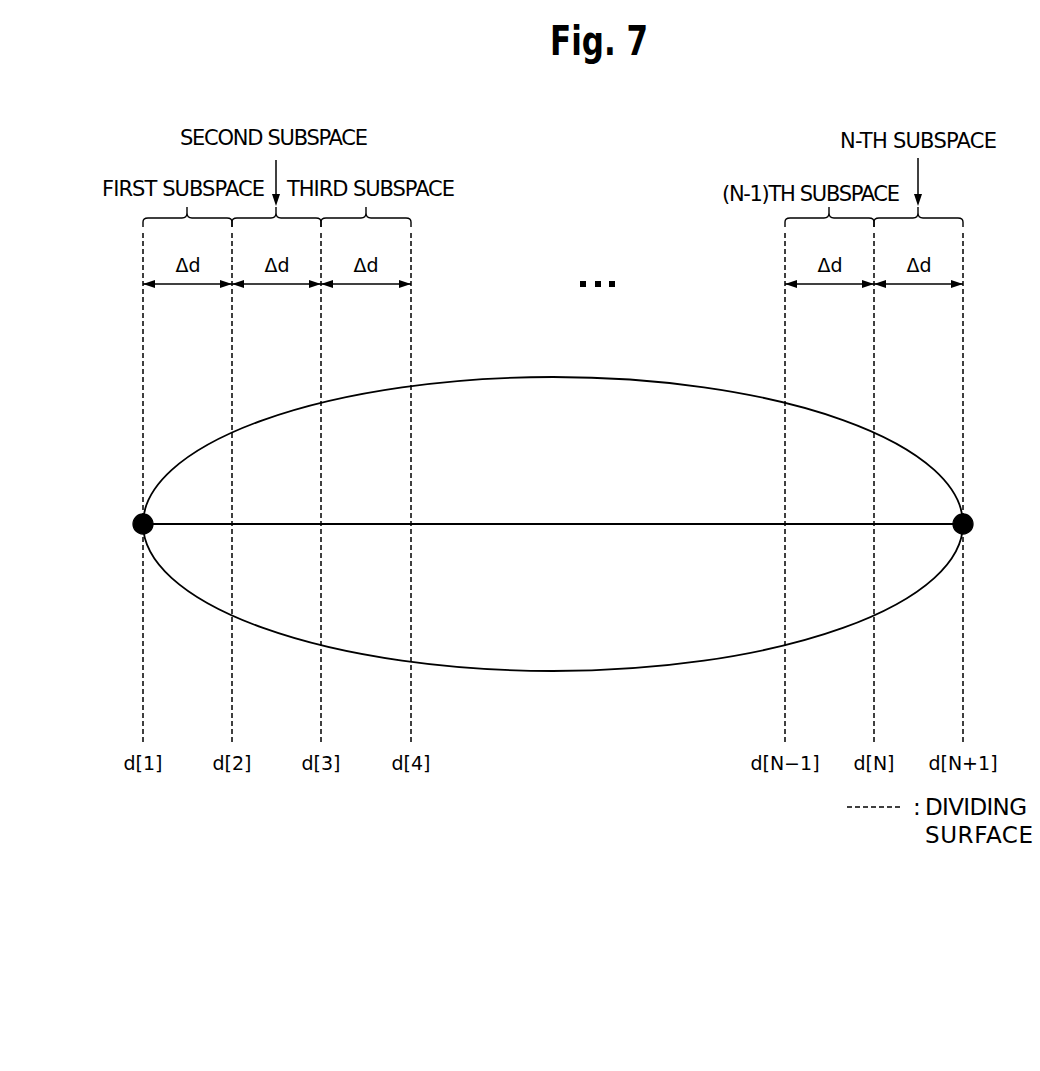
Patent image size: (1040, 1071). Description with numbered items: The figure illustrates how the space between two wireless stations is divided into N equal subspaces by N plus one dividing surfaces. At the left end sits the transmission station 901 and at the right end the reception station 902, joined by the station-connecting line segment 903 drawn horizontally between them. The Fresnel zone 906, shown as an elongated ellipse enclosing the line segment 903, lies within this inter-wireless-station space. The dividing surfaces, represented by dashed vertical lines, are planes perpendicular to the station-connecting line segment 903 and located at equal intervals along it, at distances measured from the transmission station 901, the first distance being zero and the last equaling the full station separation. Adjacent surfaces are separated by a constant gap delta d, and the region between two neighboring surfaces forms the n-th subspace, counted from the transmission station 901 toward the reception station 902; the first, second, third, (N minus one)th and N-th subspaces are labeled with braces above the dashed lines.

The transmission station 901 is at (133, 517).
The reception station 902 is at (1002, 508).
The station-connecting line segment 903 is at (583, 523).
The Fresnel zone 906 is at (663, 380).